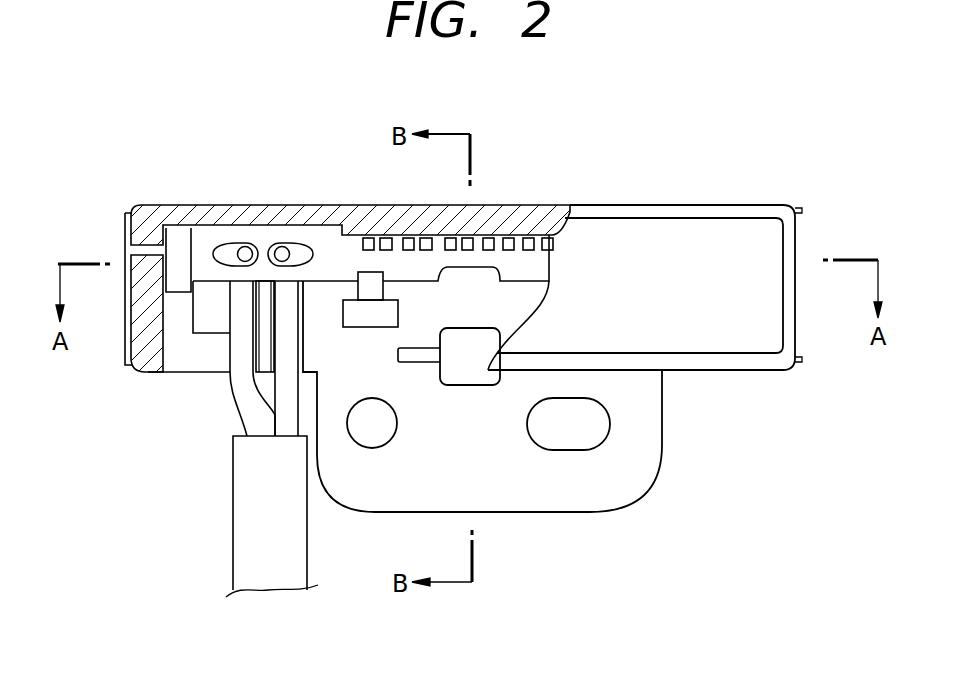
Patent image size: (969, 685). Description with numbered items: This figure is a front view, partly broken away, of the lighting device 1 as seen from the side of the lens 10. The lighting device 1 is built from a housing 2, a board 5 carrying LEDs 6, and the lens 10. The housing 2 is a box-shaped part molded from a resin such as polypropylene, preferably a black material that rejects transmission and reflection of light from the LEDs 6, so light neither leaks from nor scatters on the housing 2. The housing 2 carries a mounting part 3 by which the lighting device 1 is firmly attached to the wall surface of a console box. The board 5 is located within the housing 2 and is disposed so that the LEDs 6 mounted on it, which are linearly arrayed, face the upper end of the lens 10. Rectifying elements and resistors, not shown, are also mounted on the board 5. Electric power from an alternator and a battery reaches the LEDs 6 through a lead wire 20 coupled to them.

The lighting device 1 is at (760, 137).
The housing 2 is at (152, 372).
The mounting part 3 is at (625, 487).
The board 5 is at (313, 232).
The LEDs 6 is at (365, 238).
The lens 10 is at (732, 330).
The lead wire 20 is at (240, 403).